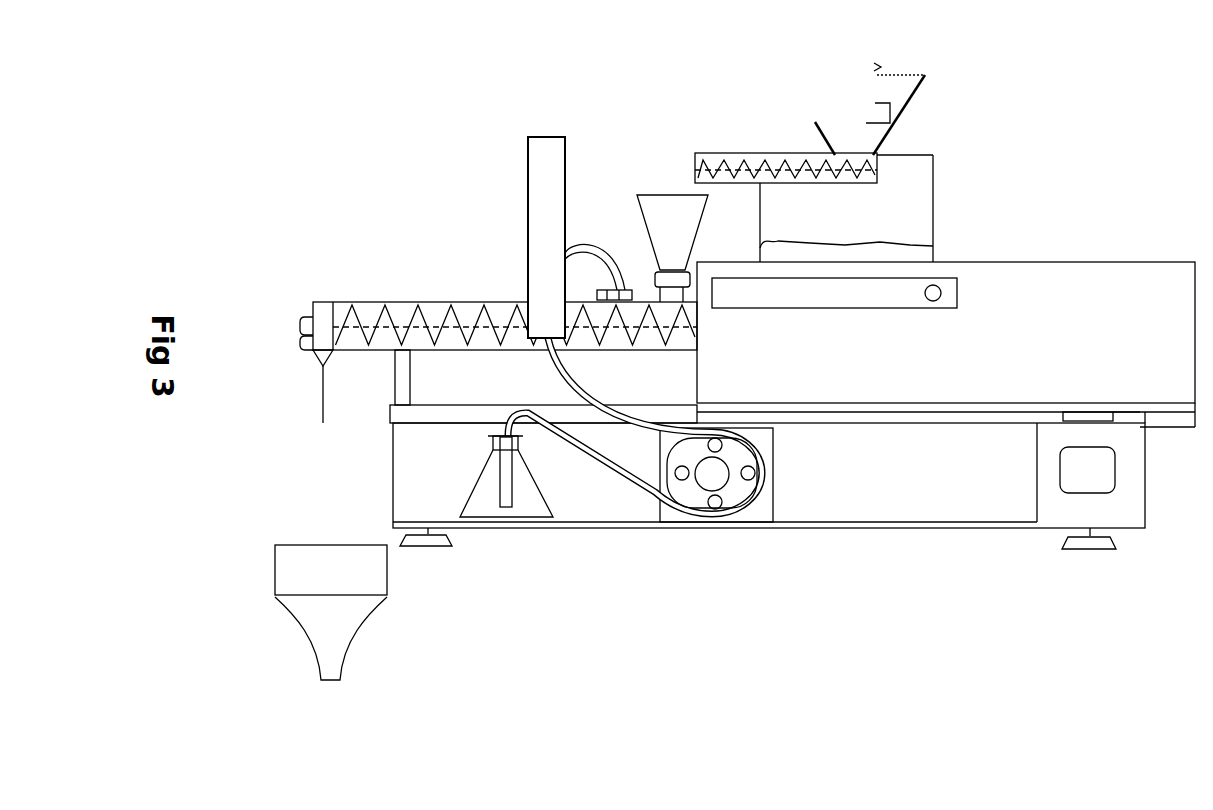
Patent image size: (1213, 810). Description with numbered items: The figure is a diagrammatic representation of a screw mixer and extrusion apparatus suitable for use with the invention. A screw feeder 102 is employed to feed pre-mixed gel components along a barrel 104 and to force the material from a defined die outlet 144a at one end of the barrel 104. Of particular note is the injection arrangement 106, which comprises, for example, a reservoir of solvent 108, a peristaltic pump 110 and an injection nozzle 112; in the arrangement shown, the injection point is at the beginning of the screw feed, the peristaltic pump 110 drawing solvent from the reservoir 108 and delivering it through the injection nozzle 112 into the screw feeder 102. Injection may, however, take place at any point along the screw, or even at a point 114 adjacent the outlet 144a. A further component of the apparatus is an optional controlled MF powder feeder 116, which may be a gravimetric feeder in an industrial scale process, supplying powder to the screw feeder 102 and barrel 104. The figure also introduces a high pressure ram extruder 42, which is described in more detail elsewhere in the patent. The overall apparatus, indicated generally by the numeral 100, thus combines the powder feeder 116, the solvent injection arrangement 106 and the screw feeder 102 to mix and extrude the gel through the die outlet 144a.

The high pressure ram extruder 42 is at (547, 173).
The processing machine 100 is at (988, 195).
The screw feeder 102 is at (462, 305).
The barrel 104 is at (376, 301).
The injection arrangement 106 is at (620, 474).
The reservoir of solvent 108 is at (487, 503).
The peristaltic pump 110 is at (738, 517).
The injection nozzle 112 is at (632, 270).
The injection point adjacent the outlet 114 is at (307, 346).
The controlled MF powder feeder 116 is at (766, 153).
The die outlet 144a is at (317, 357).